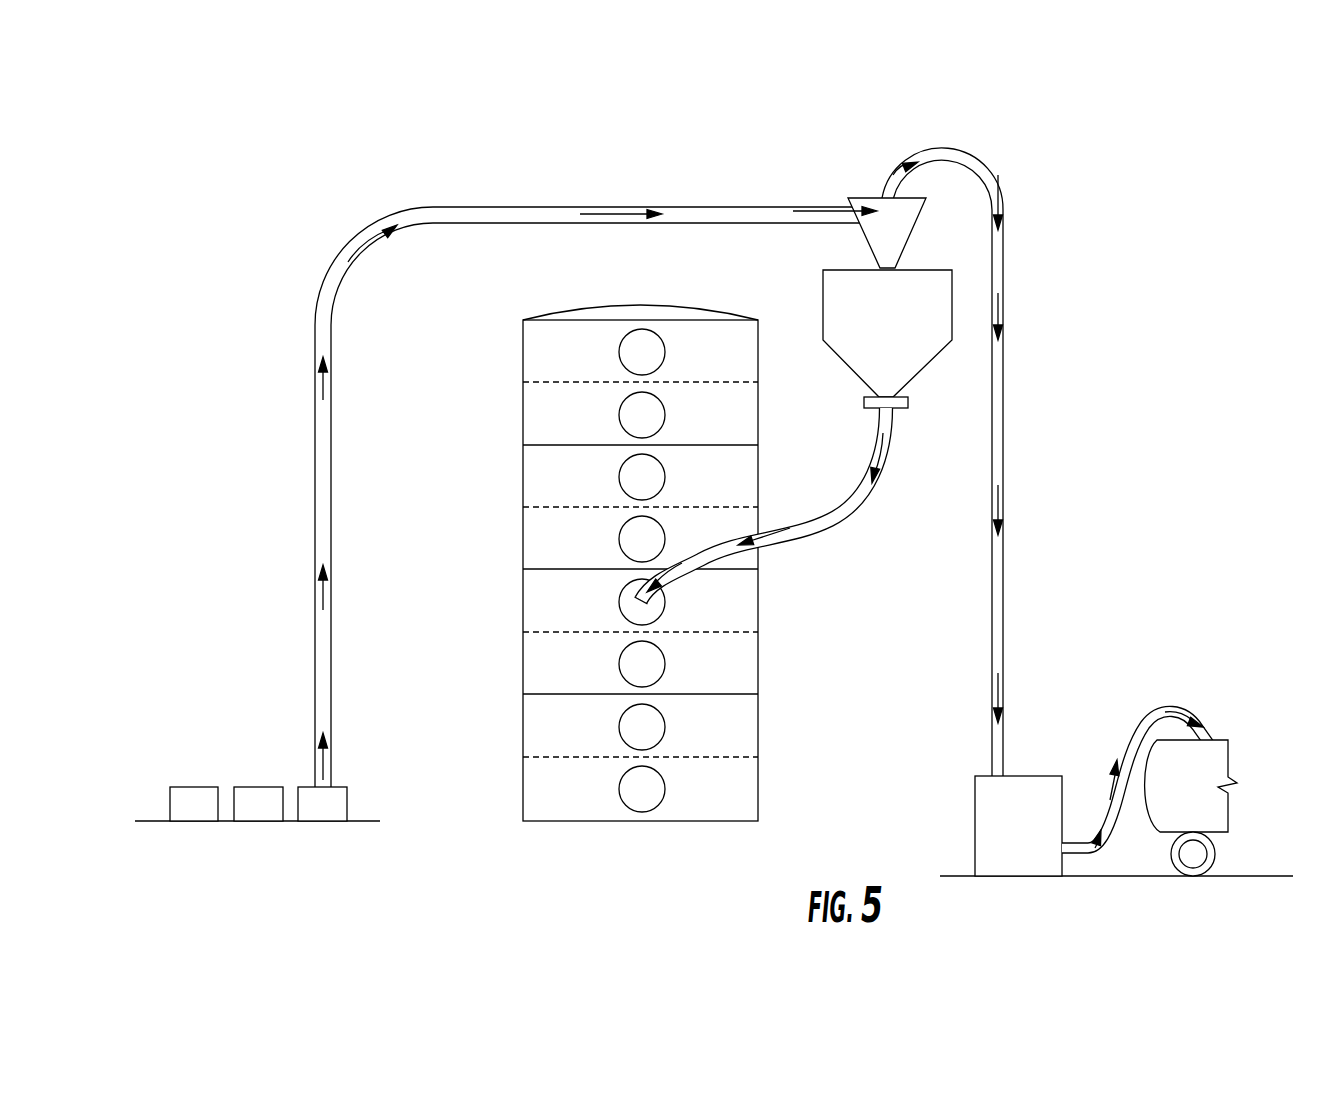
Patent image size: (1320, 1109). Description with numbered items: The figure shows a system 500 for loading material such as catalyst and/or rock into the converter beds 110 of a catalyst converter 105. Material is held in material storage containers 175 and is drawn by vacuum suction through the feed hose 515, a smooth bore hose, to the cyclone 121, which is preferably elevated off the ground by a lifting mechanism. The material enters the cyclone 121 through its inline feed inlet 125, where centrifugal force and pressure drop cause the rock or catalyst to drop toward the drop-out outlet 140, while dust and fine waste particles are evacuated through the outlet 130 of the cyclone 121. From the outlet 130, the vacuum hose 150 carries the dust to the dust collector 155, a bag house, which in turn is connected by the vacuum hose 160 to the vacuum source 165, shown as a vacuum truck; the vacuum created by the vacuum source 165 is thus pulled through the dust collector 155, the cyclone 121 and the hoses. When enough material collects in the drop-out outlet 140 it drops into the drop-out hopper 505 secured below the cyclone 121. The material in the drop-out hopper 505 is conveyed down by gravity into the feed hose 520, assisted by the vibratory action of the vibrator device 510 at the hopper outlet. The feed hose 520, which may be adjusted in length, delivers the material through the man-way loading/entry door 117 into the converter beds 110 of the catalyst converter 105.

The system 500 is at (367, 193).
The feed hose 515 is at (313, 408).
The material storage containers 175 is at (312, 787).
The catalyst converter 105 is at (615, 537).
The converter beds 110 is at (522, 362).
The man-way loading/entry door 117 is at (665, 353).
The cyclone 121 is at (928, 229).
The inline feed inlet 125 is at (868, 198).
The outlet 130 is at (892, 192).
The drop-out outlet 140 is at (897, 267).
The drop-out hopper 505 is at (952, 313).
The vibrator device 510 is at (908, 402).
The feed hose 520 is at (833, 508).
The vacuum hose 150 is at (1003, 460).
The dust collector 155 is at (1033, 775).
The vacuum hose 160 is at (1165, 703).
The vacuum source 165 is at (1148, 820).